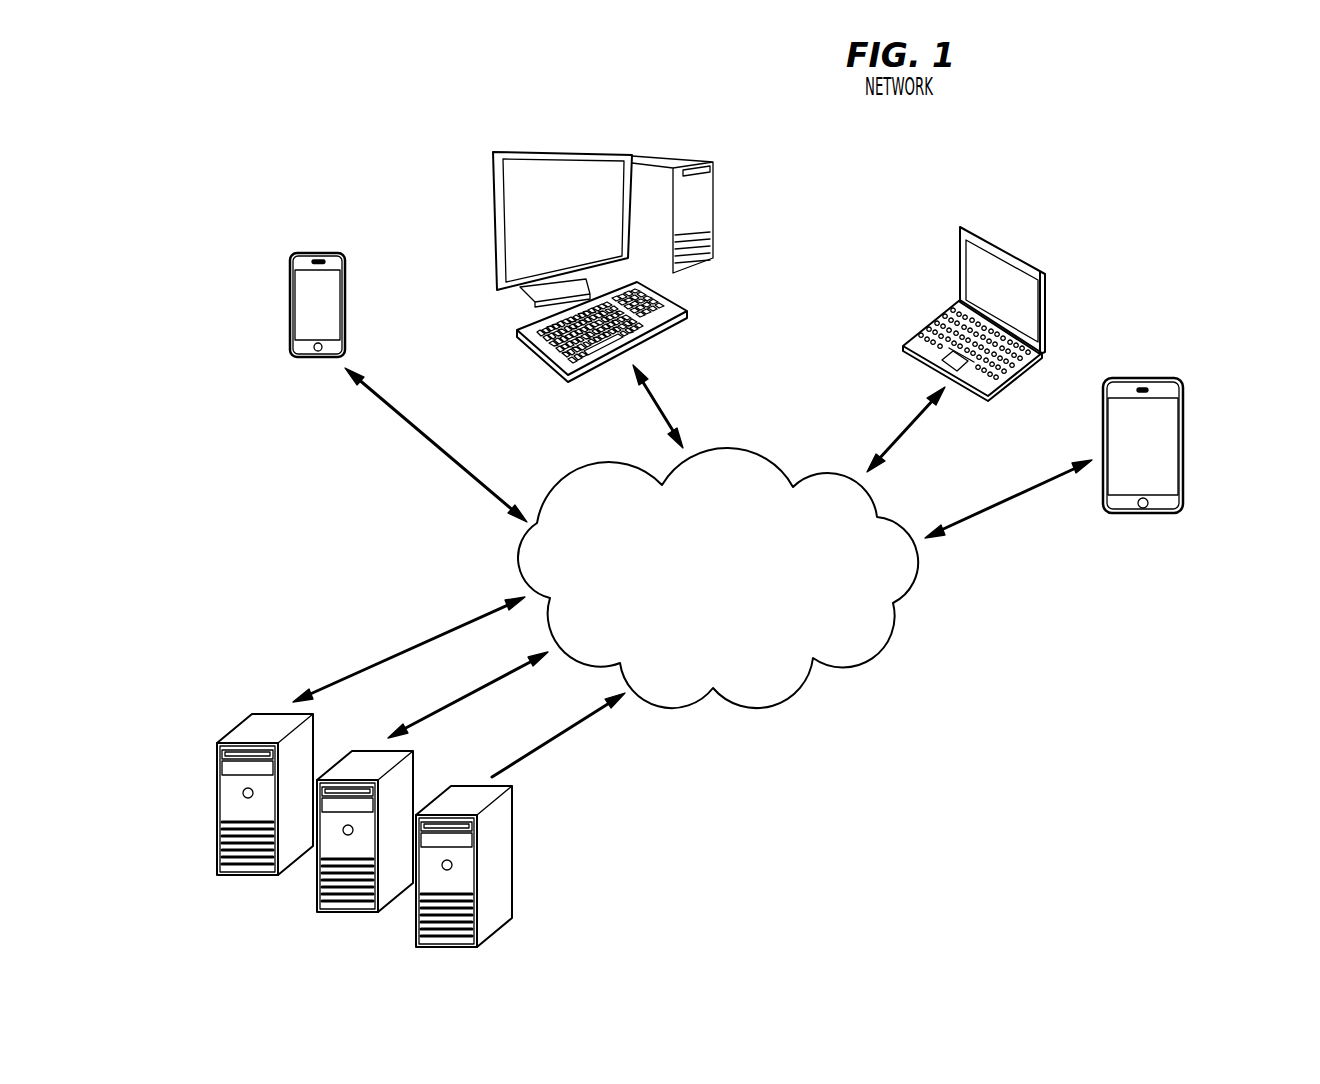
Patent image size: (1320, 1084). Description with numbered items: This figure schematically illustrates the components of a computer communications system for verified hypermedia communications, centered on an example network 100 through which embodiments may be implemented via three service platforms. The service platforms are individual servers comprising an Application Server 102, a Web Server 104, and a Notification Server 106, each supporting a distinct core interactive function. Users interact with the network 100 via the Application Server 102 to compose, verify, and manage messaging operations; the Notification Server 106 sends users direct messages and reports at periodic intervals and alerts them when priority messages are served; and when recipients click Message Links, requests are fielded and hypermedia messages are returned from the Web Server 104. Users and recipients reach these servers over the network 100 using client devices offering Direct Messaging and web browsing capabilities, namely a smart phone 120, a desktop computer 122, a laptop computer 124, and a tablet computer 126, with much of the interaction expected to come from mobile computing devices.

The network 100 is at (887, 642).
The Application Server 102 is at (217, 798).
The Web Server 104 is at (350, 912).
The Notification Server 106 is at (512, 878).
The smart phone 120 is at (290, 300).
The desktop computer 122 is at (722, 178).
The laptop computer 124 is at (1047, 294).
The tablet computer 126 is at (1184, 408).